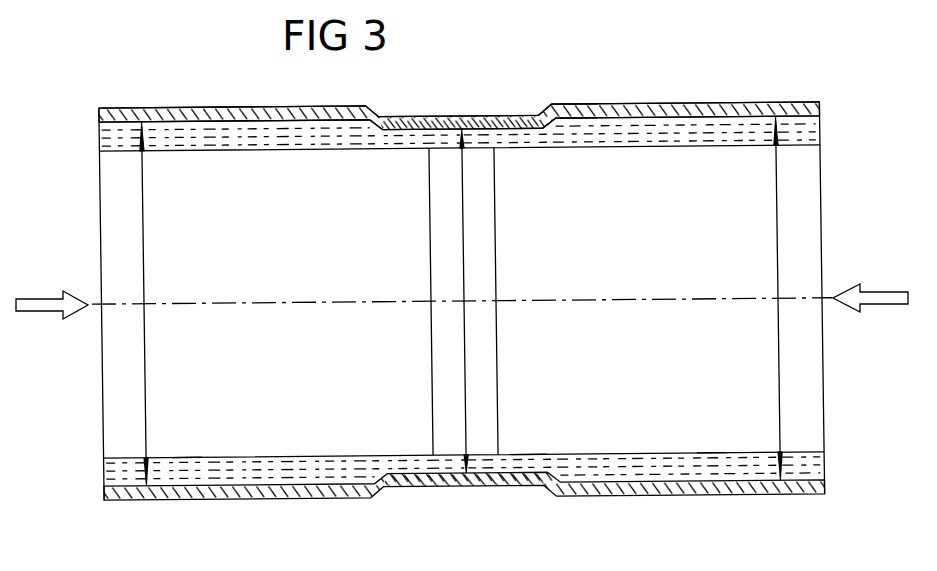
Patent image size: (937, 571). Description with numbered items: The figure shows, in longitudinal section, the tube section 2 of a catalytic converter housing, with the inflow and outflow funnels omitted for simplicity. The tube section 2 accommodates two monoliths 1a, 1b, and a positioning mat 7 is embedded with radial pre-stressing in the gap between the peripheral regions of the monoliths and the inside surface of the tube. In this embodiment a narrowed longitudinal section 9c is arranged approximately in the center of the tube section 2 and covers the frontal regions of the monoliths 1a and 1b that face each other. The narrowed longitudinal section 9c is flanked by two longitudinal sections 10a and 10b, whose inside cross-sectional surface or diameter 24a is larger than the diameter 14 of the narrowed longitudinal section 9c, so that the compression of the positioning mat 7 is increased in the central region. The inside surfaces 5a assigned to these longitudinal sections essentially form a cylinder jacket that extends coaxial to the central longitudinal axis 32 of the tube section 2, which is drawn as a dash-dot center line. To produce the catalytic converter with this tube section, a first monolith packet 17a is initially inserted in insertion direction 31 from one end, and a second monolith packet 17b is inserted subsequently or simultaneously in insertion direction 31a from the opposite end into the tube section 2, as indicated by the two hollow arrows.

The monolith 1a is at (272, 415).
The monolith 1b is at (652, 412).
The tube section 2 is at (665, 106).
The inside surface 5a is at (526, 470).
The positioning mat 7 is at (590, 116).
The narrowed longitudinal section 9c is at (453, 116).
The longitudinal section 10a is at (183, 109).
The longitudinal section 10b is at (735, 105).
The diameter 14 is at (464, 281).
The first monolith packet 17a is at (185, 452).
The second monolith packet 17b is at (709, 442).
The diameter 24a is at (145, 288).
The insertion direction 31 is at (40, 299).
The insertion direction 31a is at (883, 292).
The central longitudinal axis 32 is at (287, 300).